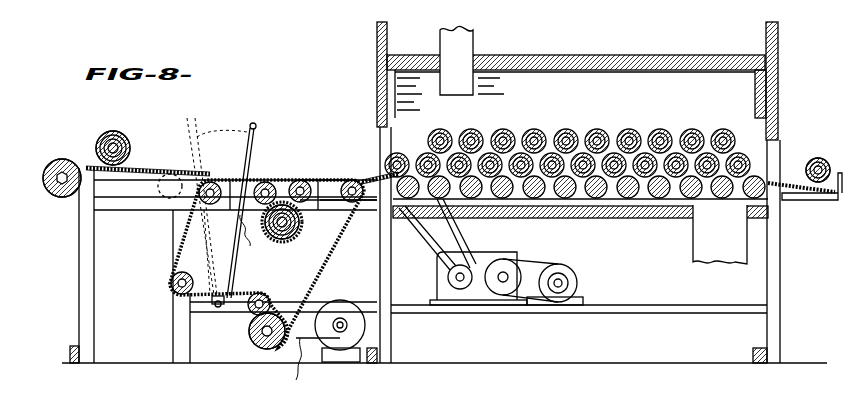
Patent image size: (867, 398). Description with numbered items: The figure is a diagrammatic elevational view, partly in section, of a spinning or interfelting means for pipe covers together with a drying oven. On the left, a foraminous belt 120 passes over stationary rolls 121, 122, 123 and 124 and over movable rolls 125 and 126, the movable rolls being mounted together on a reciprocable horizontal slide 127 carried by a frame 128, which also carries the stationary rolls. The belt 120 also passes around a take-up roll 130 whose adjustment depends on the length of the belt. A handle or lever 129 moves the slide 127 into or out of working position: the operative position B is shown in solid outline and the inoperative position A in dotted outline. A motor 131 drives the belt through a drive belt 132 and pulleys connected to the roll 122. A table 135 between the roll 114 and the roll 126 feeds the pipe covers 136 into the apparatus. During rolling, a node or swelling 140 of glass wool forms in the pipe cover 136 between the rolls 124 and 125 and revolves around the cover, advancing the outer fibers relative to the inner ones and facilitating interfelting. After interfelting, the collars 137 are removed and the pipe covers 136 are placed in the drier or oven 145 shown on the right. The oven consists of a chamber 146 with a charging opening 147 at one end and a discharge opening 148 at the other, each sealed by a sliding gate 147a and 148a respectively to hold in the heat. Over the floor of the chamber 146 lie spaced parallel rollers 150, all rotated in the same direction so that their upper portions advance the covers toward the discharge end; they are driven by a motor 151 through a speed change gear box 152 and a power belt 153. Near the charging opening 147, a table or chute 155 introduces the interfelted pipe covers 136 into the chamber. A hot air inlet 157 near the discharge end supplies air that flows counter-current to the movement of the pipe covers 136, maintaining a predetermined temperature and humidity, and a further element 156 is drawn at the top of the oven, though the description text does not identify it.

The roll 114 is at (57, 197).
The foraminous belt 120 is at (162, 270).
The stationary roll 121 is at (172, 290).
The stationary roll 122 is at (250, 340).
The stationary roll 123 is at (335, 210).
The stationary roll 124 is at (312, 182).
The movable roll 125 is at (268, 180).
The movable roll 126 is at (214, 182).
The reciprocable horizontal slide 127 is at (255, 235).
The frame 128 is at (180, 341).
The handle or lever 129 is at (250, 130).
The take-up roll 130 is at (275, 280).
The motor 131 is at (340, 350).
The drive belt 132 is at (312, 367).
The table 135 is at (176, 172).
The pipe cover 136 is at (100, 146).
The collar 137 is at (469, 395).
The node or swelling 140 is at (298, 176).
The drier or oven 145 is at (634, 54).
The chamber 146 is at (630, 96).
The charging opening 147 is at (398, 128).
The sliding gate 147a is at (385, 72).
The discharge opening 148 is at (772, 147).
The sliding gate 148a is at (778, 70).
The rollers 150 is at (560, 218).
The motor 151 is at (577, 283).
The speed change gear box 152 is at (480, 308).
The power belt 153 is at (420, 262).
The table or chute 155 is at (370, 172).
The hopper 156 is at (473, 42).
The hot air inlet 157 is at (693, 254).
The inoperative position A is at (190, 120).
The operative position B is at (262, 120).